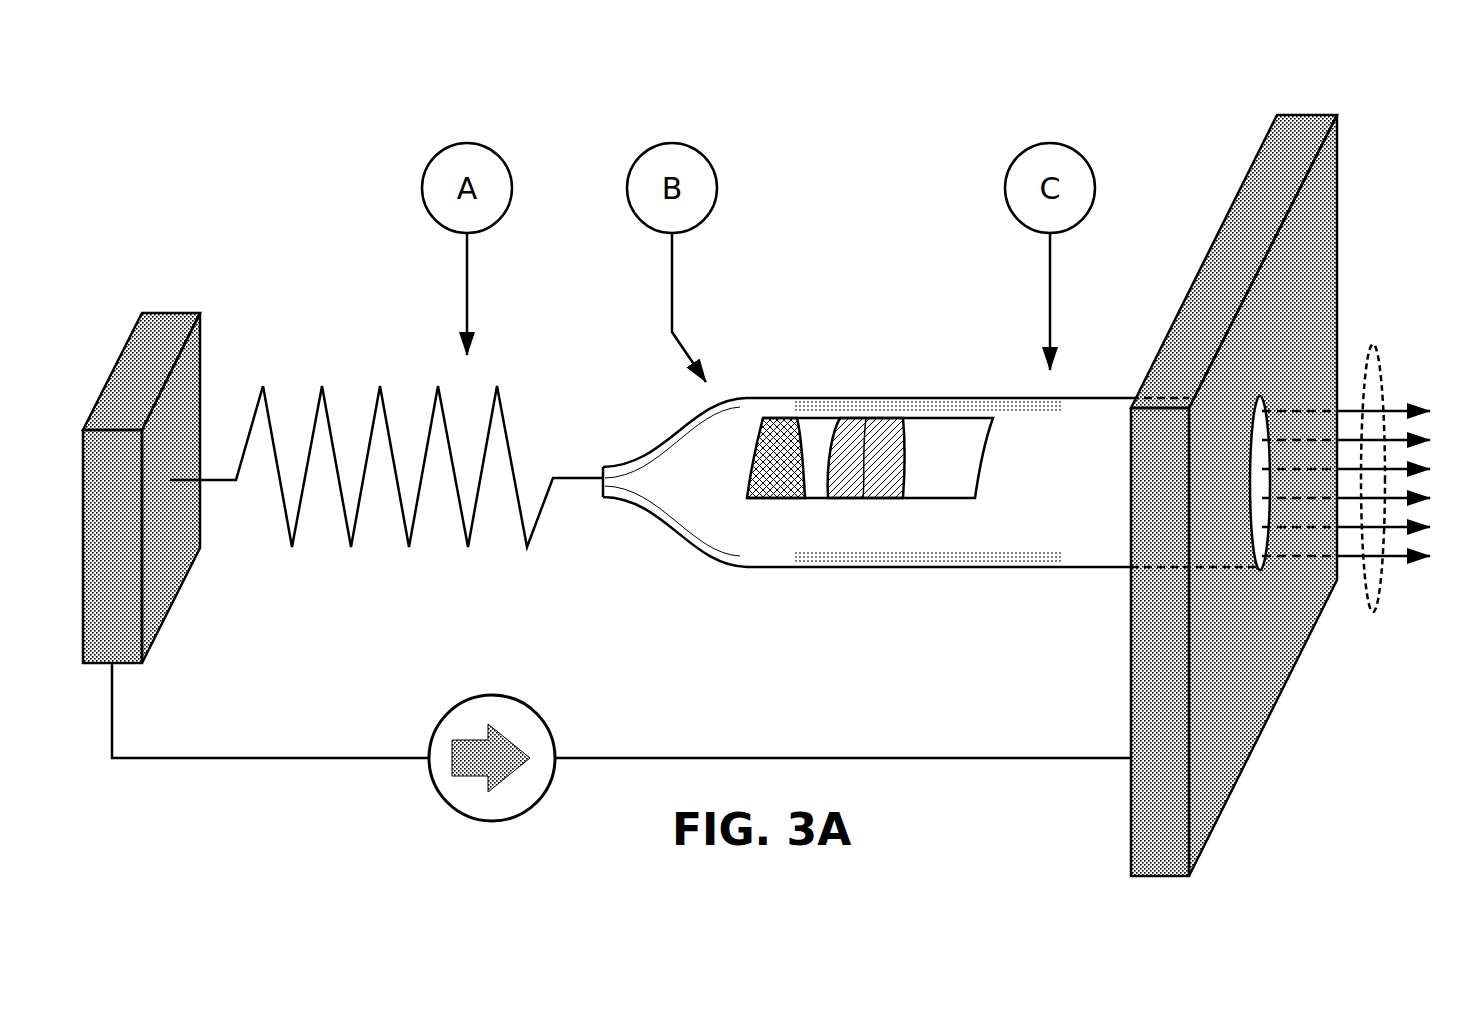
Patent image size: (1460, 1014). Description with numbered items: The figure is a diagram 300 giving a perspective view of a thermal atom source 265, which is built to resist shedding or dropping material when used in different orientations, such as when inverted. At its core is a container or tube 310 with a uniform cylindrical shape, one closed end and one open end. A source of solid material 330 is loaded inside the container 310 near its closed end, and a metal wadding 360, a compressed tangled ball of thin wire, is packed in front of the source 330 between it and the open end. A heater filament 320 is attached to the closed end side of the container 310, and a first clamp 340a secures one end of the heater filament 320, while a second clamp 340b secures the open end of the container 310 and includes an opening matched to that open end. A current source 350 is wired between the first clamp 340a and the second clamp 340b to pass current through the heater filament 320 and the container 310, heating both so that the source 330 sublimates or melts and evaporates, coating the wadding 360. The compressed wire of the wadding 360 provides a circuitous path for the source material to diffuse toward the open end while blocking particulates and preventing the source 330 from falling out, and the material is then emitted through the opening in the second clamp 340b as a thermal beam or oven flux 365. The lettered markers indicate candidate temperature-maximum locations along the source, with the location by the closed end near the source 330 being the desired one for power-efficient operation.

The thermal atom source 265 is at (317, 128).
The diagram 300 is at (1336, 52).
The container or tube 310 is at (1108, 398).
The heater filament 320 is at (385, 396).
The source of solid material 330 is at (779, 437).
The first clamp 340a is at (152, 656).
The second clamp 340b is at (1131, 840).
The current source 350 is at (540, 712).
The metal wadding 360 is at (884, 451).
The thermal beam or oven flux 365 is at (1388, 360).